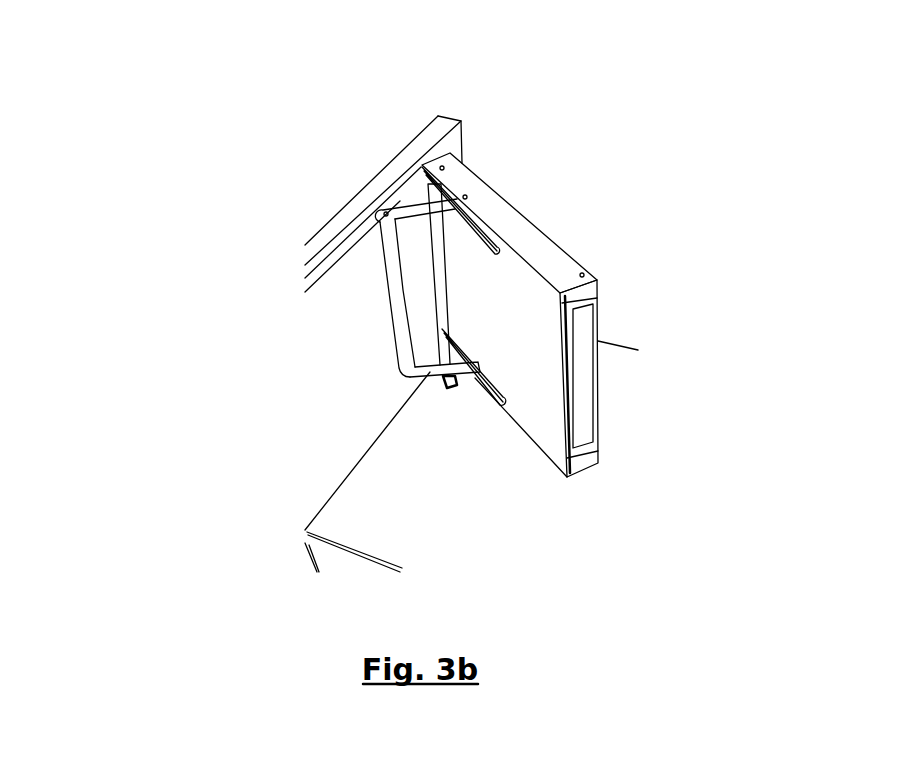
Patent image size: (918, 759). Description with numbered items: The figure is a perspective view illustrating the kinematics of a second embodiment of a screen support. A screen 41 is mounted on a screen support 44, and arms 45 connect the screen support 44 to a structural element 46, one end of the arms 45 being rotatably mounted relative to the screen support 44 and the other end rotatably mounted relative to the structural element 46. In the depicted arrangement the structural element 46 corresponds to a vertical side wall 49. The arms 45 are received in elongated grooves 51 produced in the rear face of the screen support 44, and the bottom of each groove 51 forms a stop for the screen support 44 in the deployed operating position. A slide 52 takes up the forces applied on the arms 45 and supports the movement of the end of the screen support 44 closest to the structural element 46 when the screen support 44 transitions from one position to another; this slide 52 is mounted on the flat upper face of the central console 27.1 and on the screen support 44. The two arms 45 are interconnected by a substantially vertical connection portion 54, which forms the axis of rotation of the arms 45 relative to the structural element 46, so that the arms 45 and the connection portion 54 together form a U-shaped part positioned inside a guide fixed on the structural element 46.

The first central console 27.1 is at (502, 468).
The screen 41 is at (589, 338).
The screen support 44 is at (543, 254).
The arm 45 is at (417, 208).
The structural element 46 is at (293, 248).
The vertical side wall 49 is at (338, 301).
The elongated groove 51 is at (495, 248).
The slide 52 is at (450, 384).
The connection portion 54 is at (398, 315).